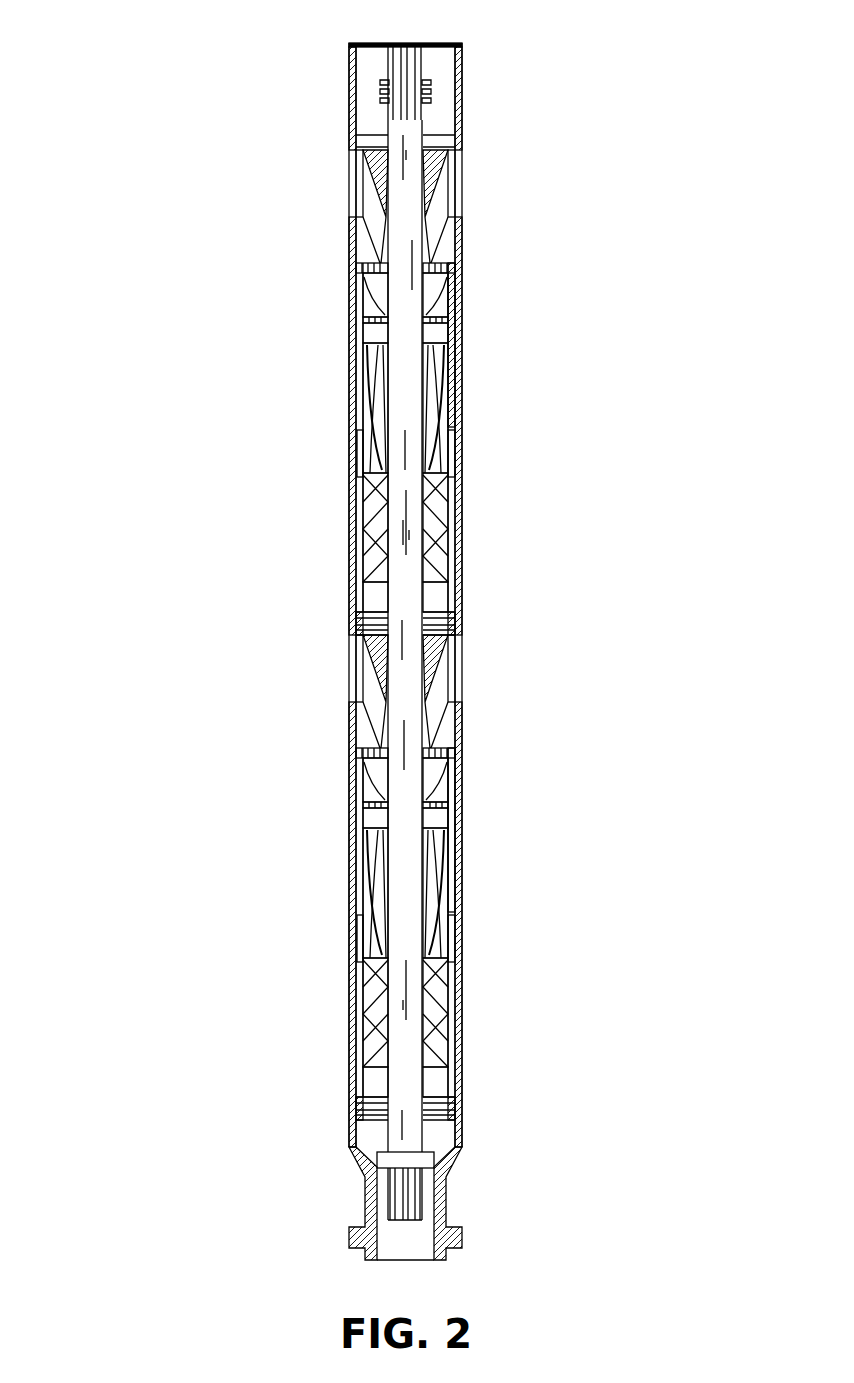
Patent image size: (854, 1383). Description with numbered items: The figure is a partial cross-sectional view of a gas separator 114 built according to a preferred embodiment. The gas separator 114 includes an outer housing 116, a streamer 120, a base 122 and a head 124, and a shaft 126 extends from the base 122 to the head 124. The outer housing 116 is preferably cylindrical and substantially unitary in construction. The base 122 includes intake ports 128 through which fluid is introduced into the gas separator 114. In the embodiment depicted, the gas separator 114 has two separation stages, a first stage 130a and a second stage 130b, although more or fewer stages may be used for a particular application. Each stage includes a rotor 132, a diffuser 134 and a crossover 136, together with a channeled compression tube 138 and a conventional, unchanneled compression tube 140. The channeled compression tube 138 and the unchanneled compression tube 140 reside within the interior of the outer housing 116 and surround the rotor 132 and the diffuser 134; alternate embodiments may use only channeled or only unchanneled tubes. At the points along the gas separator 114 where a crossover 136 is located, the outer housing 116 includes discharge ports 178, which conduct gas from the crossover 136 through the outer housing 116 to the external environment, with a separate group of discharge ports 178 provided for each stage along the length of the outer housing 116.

The gas separator 114 is at (633, 378).
The outer housing 116 is at (463, 1010).
The streamer 120 is at (372, 612).
The base 122 is at (373, 1205).
The head 124 is at (463, 93).
The shaft 126 is at (413, 597).
The intake ports 128 is at (367, 1150).
The first stage 130a is at (205, 934).
The second stage 130b is at (205, 456).
The rotor 132 is at (378, 470).
The diffuser 134 is at (372, 290).
The crossover 136 is at (375, 153).
The channeled compression tube 138 is at (455, 475).
The unchanneled compression tube 140 is at (455, 330).
The discharge ports 178 is at (356, 197).